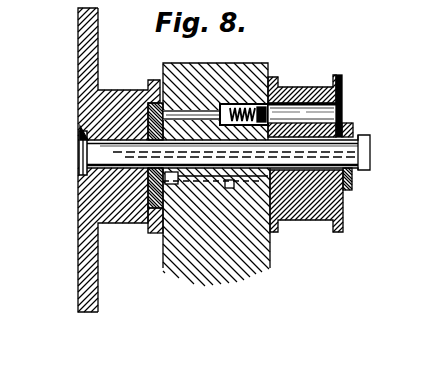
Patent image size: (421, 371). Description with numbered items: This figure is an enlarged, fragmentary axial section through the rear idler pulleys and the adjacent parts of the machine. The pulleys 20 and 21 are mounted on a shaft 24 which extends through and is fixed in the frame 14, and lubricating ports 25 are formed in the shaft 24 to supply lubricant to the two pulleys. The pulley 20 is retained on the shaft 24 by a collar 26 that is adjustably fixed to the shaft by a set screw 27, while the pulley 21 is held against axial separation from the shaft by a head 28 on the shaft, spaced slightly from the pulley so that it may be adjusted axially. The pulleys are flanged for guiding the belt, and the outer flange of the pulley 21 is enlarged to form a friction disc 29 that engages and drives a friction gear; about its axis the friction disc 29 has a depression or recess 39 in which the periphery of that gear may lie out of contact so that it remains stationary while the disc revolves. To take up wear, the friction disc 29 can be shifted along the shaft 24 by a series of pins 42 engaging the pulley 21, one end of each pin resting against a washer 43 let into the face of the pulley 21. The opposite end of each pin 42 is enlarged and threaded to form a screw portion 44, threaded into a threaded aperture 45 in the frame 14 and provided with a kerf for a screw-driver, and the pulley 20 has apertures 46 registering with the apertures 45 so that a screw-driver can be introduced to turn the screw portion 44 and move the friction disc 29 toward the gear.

The frame 14 is at (187, 257).
The pulley 20 is at (302, 90).
The pulley 21 is at (122, 90).
The shaft 24 is at (156, 212).
The lubricating ports 25 is at (79, 163).
The collar 26 is at (346, 128).
The set screw 27 is at (353, 187).
The head 28 is at (80, 172).
The friction disc 29 is at (78, 63).
The depression or recess 39 is at (79, 135).
The pins 42 is at (188, 110).
The washer 43 is at (148, 188).
The screw portion 44 is at (250, 106).
The threaded aperture 45 is at (226, 106).
The apertures 46 is at (327, 115).